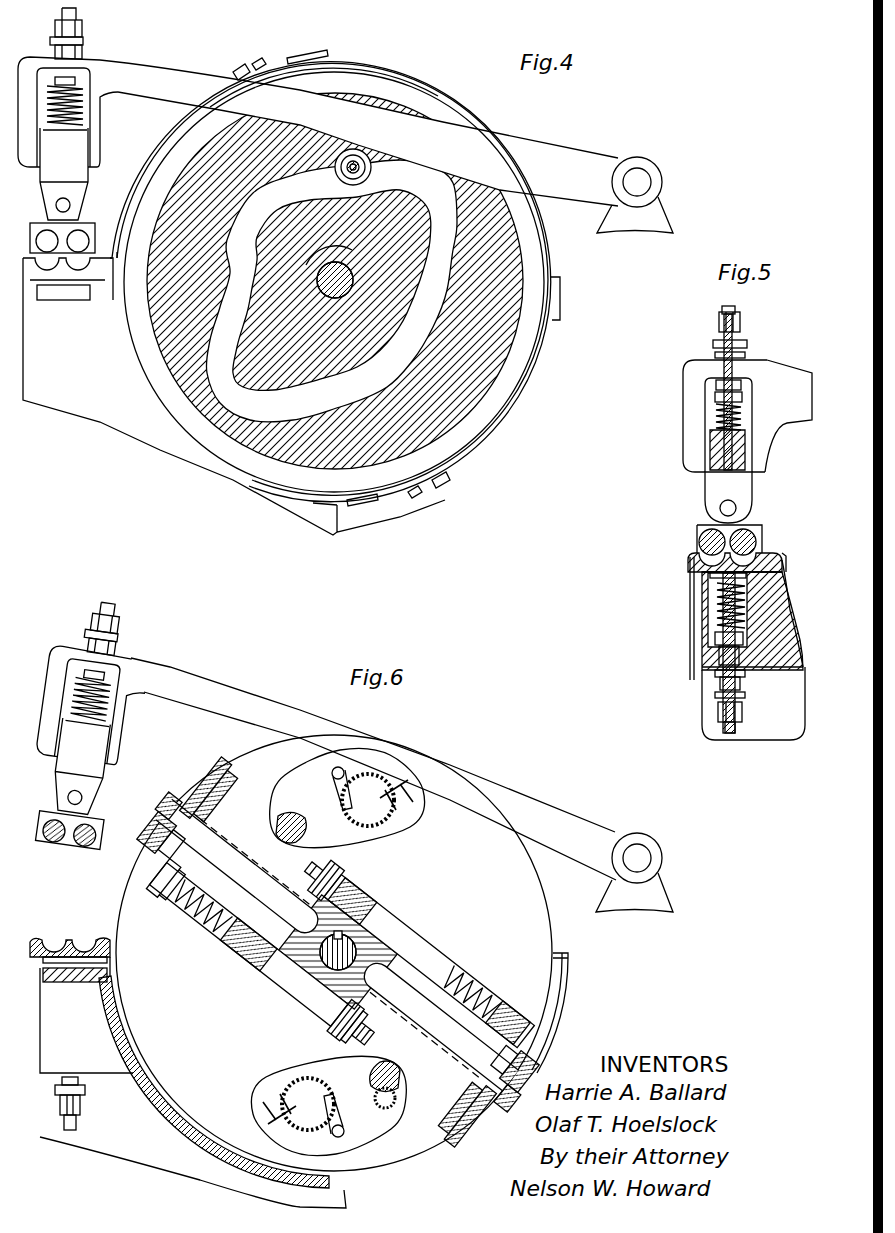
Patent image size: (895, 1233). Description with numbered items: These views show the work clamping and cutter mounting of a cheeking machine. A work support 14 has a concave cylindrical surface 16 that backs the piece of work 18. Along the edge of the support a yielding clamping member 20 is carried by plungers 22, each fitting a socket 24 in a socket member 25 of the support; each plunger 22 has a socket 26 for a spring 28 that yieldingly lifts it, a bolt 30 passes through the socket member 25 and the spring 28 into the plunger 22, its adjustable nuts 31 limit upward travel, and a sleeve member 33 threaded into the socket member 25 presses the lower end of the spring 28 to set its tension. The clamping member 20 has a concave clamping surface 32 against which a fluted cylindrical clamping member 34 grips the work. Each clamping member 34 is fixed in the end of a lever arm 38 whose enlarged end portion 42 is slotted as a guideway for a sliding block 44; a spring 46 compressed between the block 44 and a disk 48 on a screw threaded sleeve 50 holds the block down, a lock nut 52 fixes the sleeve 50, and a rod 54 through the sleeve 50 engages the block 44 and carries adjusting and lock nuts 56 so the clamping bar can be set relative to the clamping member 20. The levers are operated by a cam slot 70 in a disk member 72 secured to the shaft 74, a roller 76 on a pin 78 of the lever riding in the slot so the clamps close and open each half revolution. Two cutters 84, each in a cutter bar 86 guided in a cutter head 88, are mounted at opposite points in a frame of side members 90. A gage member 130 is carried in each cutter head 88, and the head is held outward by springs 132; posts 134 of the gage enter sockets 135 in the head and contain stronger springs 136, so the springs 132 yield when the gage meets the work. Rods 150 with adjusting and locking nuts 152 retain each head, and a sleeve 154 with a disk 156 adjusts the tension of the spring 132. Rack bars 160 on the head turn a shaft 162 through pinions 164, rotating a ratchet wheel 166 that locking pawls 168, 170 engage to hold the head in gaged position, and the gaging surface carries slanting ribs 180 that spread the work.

In FIG. 4, the work support 14 is at (95, 396).
In FIG. 5, the work support 14 is at (760, 610).
In FIG. 6, the work support 14 is at (130, 1052).
In FIG. 4, the concave cylindrical surface 16 is at (158, 426).
In FIG. 5, the concave cylindrical surface 16 is at (803, 663).
In FIG. 6, the concave cylindrical surface 16 is at (120, 1020).
In FIG. 4, the piece of work 18 is at (229, 483).
In FIG. 5, the piece of work 18 is at (768, 568).
In FIG. 4, the yielding clamping member 20 is at (70, 274).
In FIG. 5, the yielding clamping member 20 is at (757, 562).
In FIG. 6, the yielding clamping member 20 is at (55, 940).
In FIG. 5, the plunger 22 is at (718, 600).
In FIG. 6, the plunger 22 is at (80, 976).
In FIG. 5, the socket 24 is at (715, 647).
In FIG. 5, the socket member 25 is at (713, 667).
In FIG. 5, the socket 26 is at (715, 610).
In FIG. 5, the spring 28 is at (717, 623).
In FIG. 5, the bolt 30 is at (722, 687).
In FIG. 5, the adjustable nuts 31 is at (742, 722).
In FIG. 5, the concave clamping surface 32 is at (707, 567).
In FIG. 6, the concave clamping surface 32 is at (82, 940).
In FIG. 5, the sleeve member 33 is at (722, 693).
In FIG. 4, the cylindrical clamping member 34 is at (75, 239).
In FIG. 5, the cylindrical clamping member 34 is at (702, 543).
In FIG. 6, the cylindrical clamping member 34 is at (86, 845).
In FIG. 4, the lever arm 38 is at (138, 79).
In FIG. 5, the lever arm 38 is at (790, 378).
In FIG. 6, the lever arm 38 is at (174, 682).
In FIG. 5, the enlarged end portion 42 is at (698, 428).
In FIG. 4, the block 44 is at (77, 182).
In FIG. 5, the block 44 is at (712, 452).
In FIG. 5, the spring 46 is at (718, 416).
In FIG. 5, the disk 48 is at (715, 394).
In FIG. 5, the screw threaded sleeve 50 is at (716, 382).
In FIG. 5, the lock nut 52 is at (748, 350).
In FIG. 5, the rod 54 is at (726, 308).
In FIG. 5, the adjusting and lock nuts 56 is at (741, 336).
In FIG. 4, the cam slot 70 is at (437, 238).
In FIG. 4, the disk member 72 is at (510, 270).
In FIG. 4, the shaft 74 is at (345, 280).
In FIG. 6, the shaft 74 is at (350, 962).
In FIG. 4, the roller 76 is at (373, 152).
In FIG. 4, the pin 78 is at (337, 174).
In FIG. 4, the cutter 84 is at (258, 66).
In FIG. 6, the cutter 84 is at (170, 809).
In FIG. 6, the cutter bar 86 is at (220, 806).
In FIG. 4, the cutter head 88 is at (283, 60).
In FIG. 6, the cutter head 88 is at (215, 780).
In FIG. 4, the side member 90 is at (550, 306).
In FIG. 4, the gage member 130 is at (240, 71).
In FIG. 6, the gage member 130 is at (150, 837).
In FIG. 6, the spring 132 is at (401, 937).
In FIG. 6, the post 134 is at (172, 878).
In FIG. 6, the socket 135 is at (223, 921).
In FIG. 6, the spring 136 is at (199, 901).
In FIG. 6, the rod 150 is at (333, 872).
In FIG. 6, the adjusting and locking nuts 152 is at (339, 1029).
In FIG. 6, the sleeve 154 is at (316, 1013).
In FIG. 6, the disk 156 is at (292, 982).
In FIG. 6, the rack bar 160 is at (271, 816).
In FIG. 6, the shaft 162 is at (388, 1099).
In FIG. 6, the pinion 164 is at (299, 820).
In FIG. 6, the ratchet wheel 166 is at (340, 826).
In FIG. 6, the locking pawl 168 is at (345, 777).
In FIG. 6, the locking pawl 170 is at (350, 806).
In FIG. 6, the ribs 180 is at (157, 827).